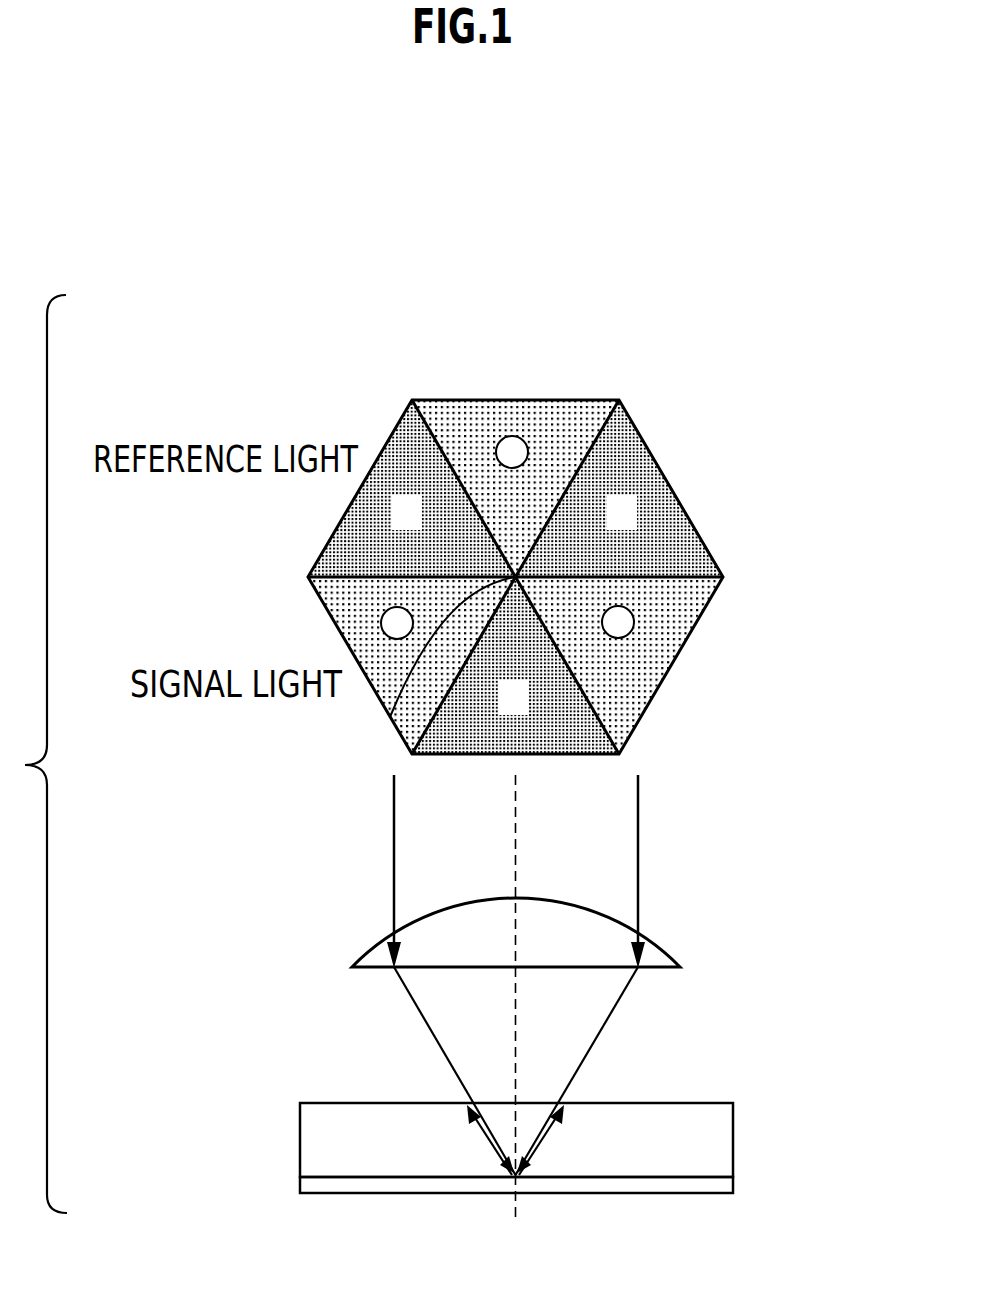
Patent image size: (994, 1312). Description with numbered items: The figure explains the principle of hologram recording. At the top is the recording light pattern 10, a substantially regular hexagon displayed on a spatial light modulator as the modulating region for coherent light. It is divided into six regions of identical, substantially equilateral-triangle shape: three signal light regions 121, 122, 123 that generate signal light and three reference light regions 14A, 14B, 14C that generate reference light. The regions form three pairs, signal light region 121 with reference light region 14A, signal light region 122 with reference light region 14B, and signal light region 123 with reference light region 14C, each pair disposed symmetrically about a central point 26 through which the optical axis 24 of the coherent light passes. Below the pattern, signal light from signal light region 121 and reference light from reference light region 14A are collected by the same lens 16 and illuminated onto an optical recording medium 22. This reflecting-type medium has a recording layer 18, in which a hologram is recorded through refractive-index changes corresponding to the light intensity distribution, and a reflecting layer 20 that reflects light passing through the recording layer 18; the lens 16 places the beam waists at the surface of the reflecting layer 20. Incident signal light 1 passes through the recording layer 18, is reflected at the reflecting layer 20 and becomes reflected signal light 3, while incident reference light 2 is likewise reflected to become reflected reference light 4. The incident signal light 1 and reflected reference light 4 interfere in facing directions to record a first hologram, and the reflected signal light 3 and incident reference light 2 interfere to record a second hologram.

The recording light pattern 10 is at (502, 549).
The signal light region 123 is at (597, 398).
The signal light region 122 is at (336, 625).
The signal light region 121 is at (670, 668).
The reference light region 14A is at (341, 520).
The reference light region 14B is at (667, 482).
The reference light region 14C is at (475, 756).
The central point 26 is at (388, 720).
The optical axis 24 is at (518, 848).
The incident signal light 1 is at (640, 848).
The incident reference light 2 is at (392, 848).
The reflected signal light 3 is at (489, 1143).
The reflected reference light 4 is at (542, 1145).
The lens 16 is at (668, 952).
The recording layer 18 is at (733, 1145).
The reflecting layer 20 is at (733, 1187).
The optical recording medium 22 is at (589, 1154).